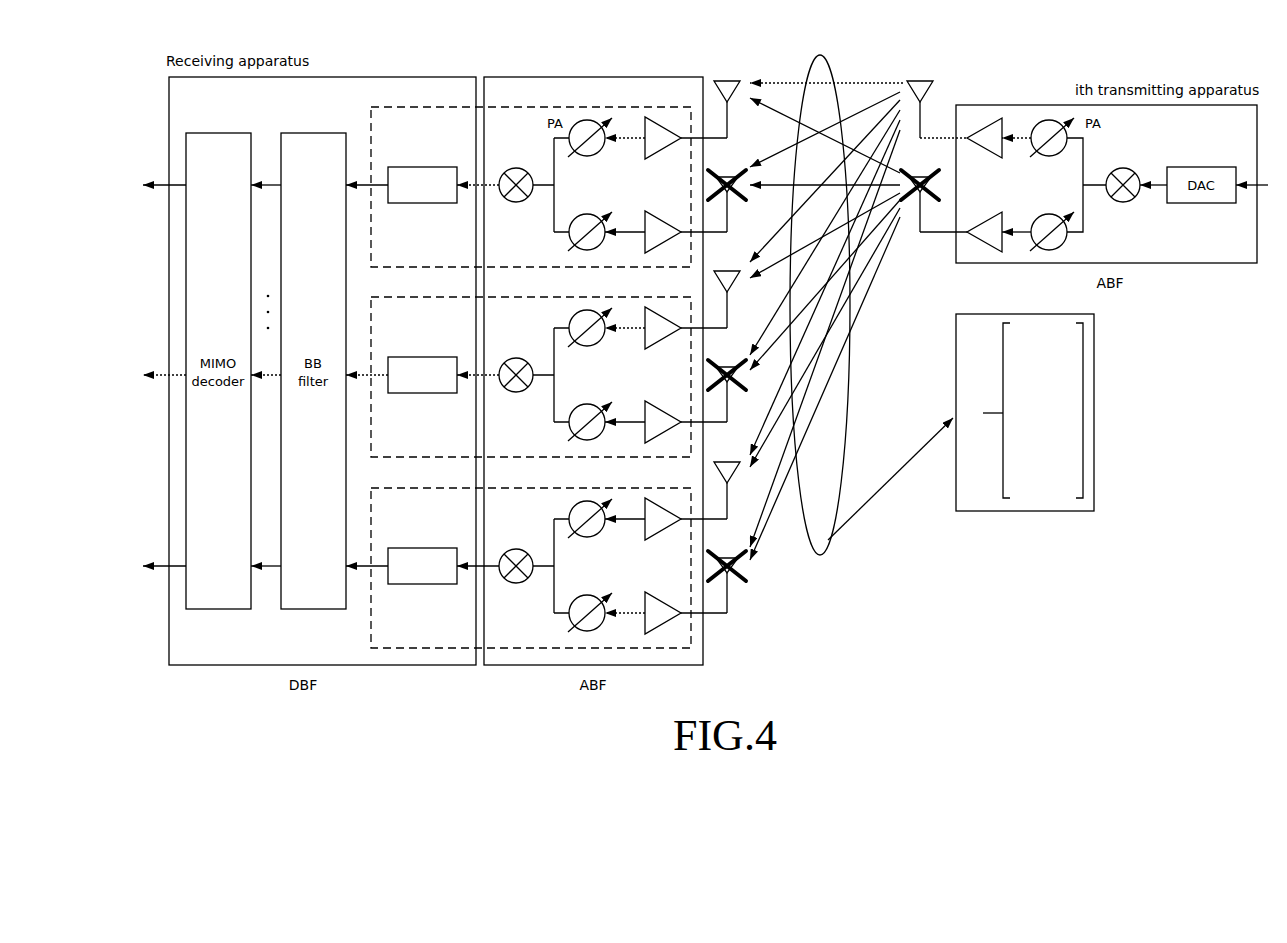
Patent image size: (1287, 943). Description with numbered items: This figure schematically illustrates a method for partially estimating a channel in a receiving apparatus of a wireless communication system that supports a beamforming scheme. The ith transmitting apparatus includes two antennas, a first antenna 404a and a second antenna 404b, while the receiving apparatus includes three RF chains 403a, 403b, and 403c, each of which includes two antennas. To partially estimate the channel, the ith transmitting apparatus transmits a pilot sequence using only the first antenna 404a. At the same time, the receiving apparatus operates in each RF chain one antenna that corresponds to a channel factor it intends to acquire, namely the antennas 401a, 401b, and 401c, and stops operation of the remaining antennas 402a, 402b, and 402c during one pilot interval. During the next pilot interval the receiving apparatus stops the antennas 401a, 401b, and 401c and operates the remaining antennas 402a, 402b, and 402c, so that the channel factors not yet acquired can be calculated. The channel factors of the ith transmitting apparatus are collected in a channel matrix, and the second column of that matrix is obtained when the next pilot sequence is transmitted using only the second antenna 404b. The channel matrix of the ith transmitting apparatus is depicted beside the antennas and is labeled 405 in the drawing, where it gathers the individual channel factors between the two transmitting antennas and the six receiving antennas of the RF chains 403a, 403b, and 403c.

The antenna 401a is at (727, 80).
The antenna 401b is at (727, 270).
The antenna 401c is at (727, 461).
The antenna 402a is at (727, 170).
The antenna 402b is at (727, 360).
The antenna 402c is at (744, 569).
The RF chain 403a is at (533, 107).
The RF chain 403b is at (533, 297).
The RF chain 403c is at (533, 488).
The first antenna 404a is at (920, 80).
The second antenna 404b is at (920, 236).
The channel matrix 405 is at (1095, 415).